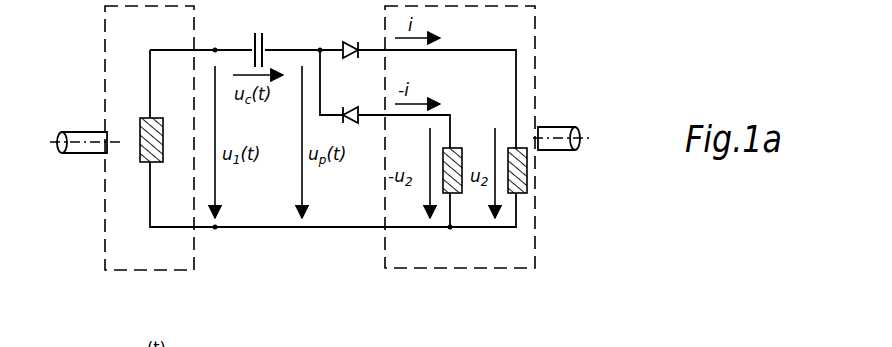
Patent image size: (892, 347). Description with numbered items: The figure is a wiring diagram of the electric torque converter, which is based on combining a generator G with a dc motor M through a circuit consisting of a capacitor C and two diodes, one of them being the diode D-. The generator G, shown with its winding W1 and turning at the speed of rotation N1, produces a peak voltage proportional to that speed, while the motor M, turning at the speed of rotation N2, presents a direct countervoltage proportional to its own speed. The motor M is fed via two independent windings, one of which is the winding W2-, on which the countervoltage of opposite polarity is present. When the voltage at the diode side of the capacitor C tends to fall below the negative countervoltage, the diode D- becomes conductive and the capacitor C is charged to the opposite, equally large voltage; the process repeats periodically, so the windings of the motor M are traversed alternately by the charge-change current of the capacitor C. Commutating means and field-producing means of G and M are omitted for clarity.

The generator G is at (149, 138).
The dc motor M is at (460, 137).
The capacitor C is at (257, 37).
The diode D- is at (349, 99).
The generator winding W1 is at (137, 152).
The motor winding W2- is at (454, 202).
The speed of rotation of the generator N1 is at (86, 125).
The speed of rotation of the motor N2 is at (561, 125).